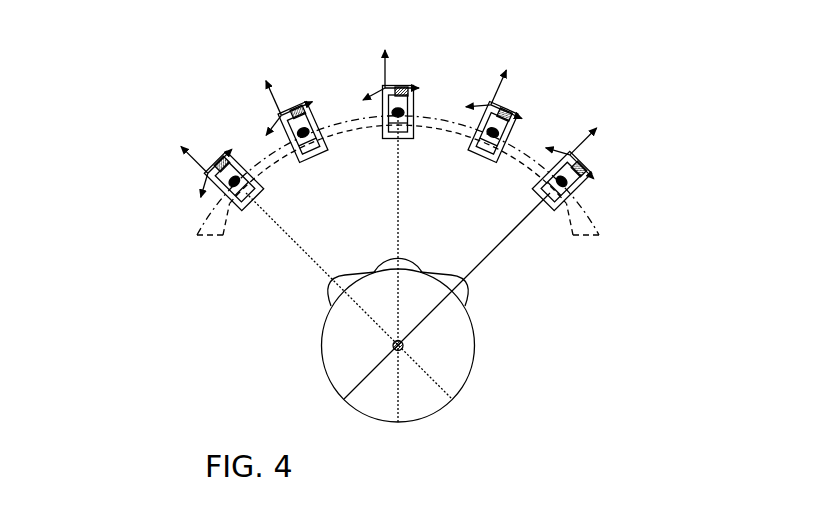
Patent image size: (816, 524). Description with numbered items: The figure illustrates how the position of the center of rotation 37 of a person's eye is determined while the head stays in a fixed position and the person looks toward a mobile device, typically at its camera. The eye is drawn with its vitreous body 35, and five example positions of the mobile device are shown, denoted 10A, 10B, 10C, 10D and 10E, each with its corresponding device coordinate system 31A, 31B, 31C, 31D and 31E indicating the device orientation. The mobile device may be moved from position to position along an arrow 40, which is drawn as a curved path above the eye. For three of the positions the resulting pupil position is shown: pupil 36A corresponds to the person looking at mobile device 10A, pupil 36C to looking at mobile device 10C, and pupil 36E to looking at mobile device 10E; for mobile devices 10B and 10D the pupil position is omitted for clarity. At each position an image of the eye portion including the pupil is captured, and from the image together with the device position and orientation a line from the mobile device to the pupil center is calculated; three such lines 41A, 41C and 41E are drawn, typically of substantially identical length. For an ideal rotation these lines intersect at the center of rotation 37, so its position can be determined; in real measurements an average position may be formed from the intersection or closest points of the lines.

The mobile device at first position 10A is at (226, 152).
The mobile device at second position 10B is at (326, 147).
The mobile device at third position 10C is at (415, 100).
The mobile device at fourth position 10D is at (518, 130).
The mobile device at fifth position 10E is at (578, 198).
The device coordinate system 31A is at (178, 147).
The device coordinate system 31B is at (272, 82).
The device coordinate system 31C is at (388, 67).
The device coordinate system 31D is at (508, 78).
The device coordinate system 31E is at (600, 128).
The vitreous body 35 is at (460, 396).
The pupil 36A is at (348, 272).
The pupil 36C is at (415, 259).
The pupil 36E is at (470, 295).
The center of rotation 37 is at (406, 345).
The arrow 40 is at (600, 240).
The line 41A is at (308, 255).
The line 41C is at (400, 194).
The line 41E is at (518, 226).